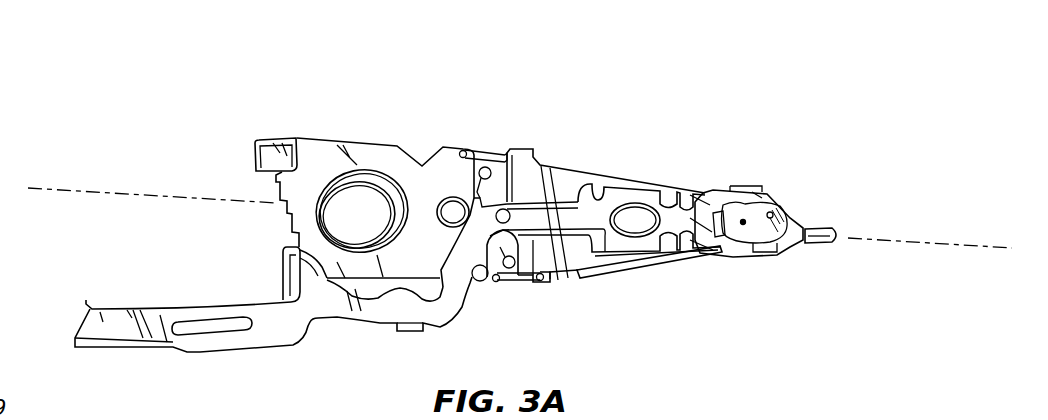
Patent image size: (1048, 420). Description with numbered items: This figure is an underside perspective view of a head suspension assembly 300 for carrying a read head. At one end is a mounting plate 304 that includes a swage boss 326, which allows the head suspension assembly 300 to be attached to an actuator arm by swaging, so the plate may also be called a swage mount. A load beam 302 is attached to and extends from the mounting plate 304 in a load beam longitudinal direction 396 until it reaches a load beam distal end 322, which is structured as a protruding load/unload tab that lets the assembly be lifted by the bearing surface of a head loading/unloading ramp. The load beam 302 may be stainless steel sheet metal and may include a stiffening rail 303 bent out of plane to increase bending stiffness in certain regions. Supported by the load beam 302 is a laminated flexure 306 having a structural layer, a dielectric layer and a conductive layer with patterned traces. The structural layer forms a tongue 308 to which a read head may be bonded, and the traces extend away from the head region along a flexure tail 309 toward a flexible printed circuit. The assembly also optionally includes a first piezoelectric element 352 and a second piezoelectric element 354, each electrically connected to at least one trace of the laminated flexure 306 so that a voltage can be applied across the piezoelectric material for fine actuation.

The head suspension assembly 300 is at (621, 114).
The load beam 302 is at (572, 176).
The stiffening rail 303 is at (597, 270).
The mounting plate 304 is at (320, 148).
The laminated flexure 306 is at (667, 258).
The tongue 308 is at (748, 190).
The flexure tail 309 is at (100, 320).
The load beam distal end 322 is at (828, 232).
The swage boss 326 is at (376, 185).
The first piezoelectric element 352 is at (523, 266).
The second piezoelectric element 354 is at (502, 153).
The load beam longitudinal direction 396 is at (962, 241).